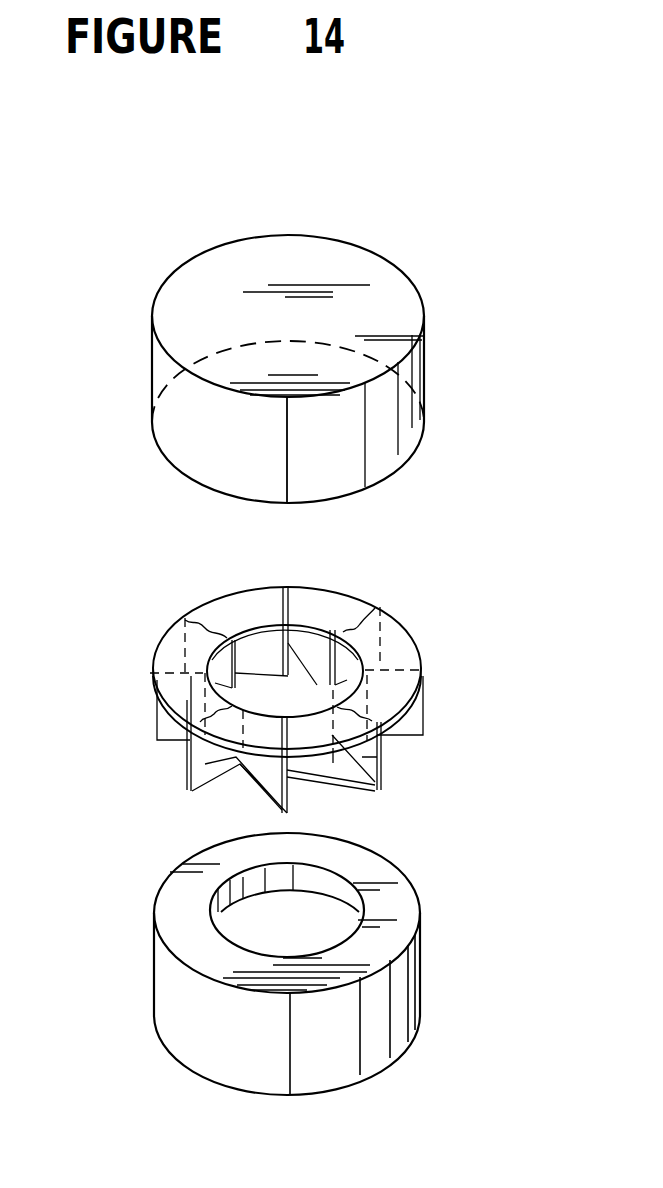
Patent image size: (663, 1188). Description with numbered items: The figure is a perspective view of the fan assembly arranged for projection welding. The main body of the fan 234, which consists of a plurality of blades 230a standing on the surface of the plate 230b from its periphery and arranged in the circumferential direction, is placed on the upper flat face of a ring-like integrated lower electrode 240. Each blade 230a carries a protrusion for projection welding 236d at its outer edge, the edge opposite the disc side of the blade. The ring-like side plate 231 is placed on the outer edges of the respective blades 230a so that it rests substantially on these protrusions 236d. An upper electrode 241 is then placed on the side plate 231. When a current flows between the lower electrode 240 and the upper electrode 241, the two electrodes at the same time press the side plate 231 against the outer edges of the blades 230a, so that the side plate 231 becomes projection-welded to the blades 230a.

The upper electrode 241 is at (423, 362).
The ring-like side plate 231 is at (405, 618).
The protrusion for projection welding 236d is at (395, 663).
The blades 230a is at (205, 762).
The plate 230b is at (297, 675).
The main body of the fan 234 is at (384, 790).
The ring-like integrated lower electrode 240 is at (424, 970).